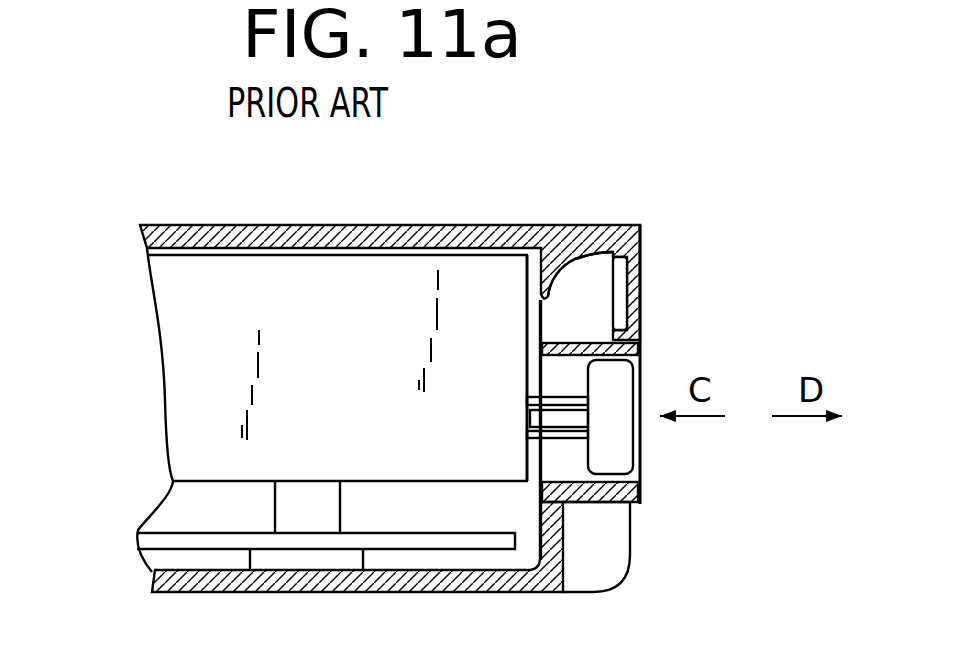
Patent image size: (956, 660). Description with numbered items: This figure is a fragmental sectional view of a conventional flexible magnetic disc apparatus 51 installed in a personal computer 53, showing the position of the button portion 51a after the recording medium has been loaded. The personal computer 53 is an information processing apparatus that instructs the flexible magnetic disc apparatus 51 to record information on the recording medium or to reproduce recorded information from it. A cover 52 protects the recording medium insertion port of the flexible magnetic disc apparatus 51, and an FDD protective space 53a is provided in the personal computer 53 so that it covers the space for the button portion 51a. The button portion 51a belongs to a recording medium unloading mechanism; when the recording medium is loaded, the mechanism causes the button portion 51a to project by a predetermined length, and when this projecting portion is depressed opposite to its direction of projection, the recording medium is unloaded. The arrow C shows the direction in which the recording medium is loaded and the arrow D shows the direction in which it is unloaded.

The flexible magnetic disc apparatus 51 is at (203, 382).
The button portion 51a is at (636, 444).
The cover 52 is at (638, 328).
The personal computer 53 is at (517, 225).
The FDD protective space 53a is at (580, 298).